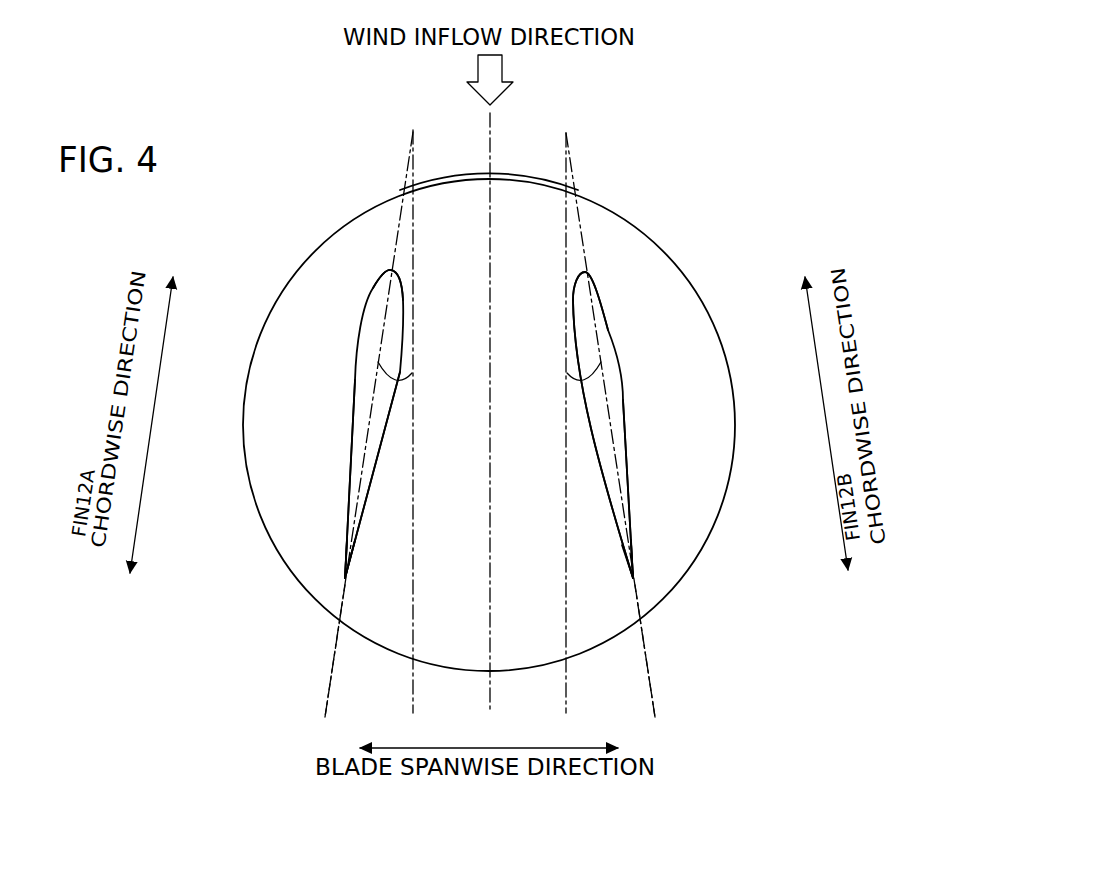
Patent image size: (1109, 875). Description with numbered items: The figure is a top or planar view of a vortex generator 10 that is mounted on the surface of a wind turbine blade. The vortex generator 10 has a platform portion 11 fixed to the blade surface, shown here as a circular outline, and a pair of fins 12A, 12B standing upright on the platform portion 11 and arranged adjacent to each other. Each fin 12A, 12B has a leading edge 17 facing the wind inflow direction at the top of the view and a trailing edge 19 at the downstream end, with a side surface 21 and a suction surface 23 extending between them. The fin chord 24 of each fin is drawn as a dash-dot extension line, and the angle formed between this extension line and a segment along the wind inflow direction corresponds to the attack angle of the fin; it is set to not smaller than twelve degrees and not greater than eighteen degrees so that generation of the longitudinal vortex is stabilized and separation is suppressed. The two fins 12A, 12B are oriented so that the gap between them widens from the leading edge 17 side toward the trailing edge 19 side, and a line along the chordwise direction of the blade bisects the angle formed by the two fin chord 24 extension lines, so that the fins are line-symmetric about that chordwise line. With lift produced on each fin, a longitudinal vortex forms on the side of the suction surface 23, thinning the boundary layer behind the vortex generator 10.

The vortex generator 10 is at (706, 181).
The platform portion 11 is at (535, 216).
The fin 12A is at (362, 310).
The fin 12B is at (610, 315).
The leading edge 17 is at (390, 262).
The trailing edge 19 is at (347, 584).
The pressure surface 21 is at (345, 536).
The suction surface 23 is at (357, 534).
The fin chord 24 is at (380, 363).